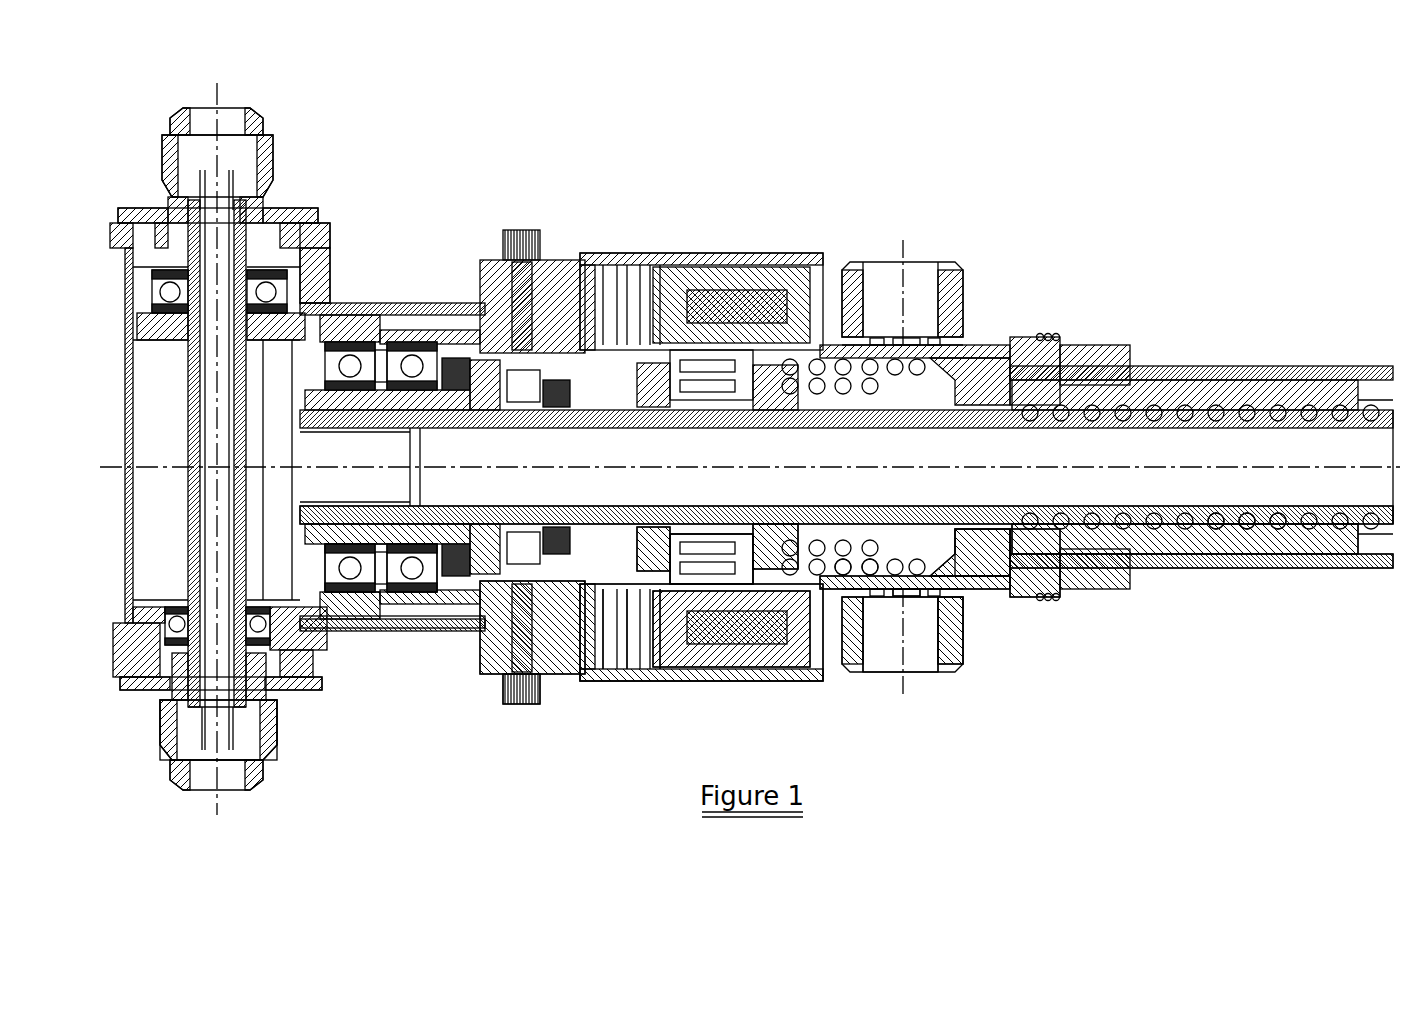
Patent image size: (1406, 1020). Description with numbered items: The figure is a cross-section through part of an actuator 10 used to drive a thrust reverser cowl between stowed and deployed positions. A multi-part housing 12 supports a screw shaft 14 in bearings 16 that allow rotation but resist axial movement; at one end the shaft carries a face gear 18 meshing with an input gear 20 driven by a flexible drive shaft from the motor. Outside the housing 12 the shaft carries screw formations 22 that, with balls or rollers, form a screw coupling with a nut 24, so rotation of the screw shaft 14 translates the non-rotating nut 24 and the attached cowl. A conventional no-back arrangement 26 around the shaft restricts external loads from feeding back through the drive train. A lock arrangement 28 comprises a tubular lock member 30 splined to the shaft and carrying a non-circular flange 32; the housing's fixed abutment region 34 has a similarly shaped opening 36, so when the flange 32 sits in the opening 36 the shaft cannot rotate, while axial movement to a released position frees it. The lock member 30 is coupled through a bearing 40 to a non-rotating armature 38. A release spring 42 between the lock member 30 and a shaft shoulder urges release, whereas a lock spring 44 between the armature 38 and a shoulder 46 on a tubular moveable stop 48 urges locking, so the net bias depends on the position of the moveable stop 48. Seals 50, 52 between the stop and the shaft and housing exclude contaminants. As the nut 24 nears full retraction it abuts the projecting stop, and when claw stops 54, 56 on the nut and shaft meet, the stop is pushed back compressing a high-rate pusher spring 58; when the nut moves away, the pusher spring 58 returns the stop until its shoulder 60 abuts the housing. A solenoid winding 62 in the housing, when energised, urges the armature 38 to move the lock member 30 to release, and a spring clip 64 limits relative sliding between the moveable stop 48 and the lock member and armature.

The actuator 10 is at (914, 230).
The housing 12 is at (410, 642).
The screw shaft 14 is at (1155, 408).
The bearings 16 is at (417, 580).
The face gear 18 is at (295, 608).
The input gear 20 is at (328, 256).
The screw formations 22 is at (1260, 407).
The nut 24 is at (1310, 392).
The no-back arrangement 26 is at (510, 572).
The lock arrangement 28 is at (655, 250).
The lock member 30 is at (745, 330).
The flange 32 is at (670, 266).
The abutment region 34 is at (608, 262).
The opening 36 is at (627, 262).
The armature 38 is at (767, 582).
The bearing 40 is at (687, 572).
The release spring 42 is at (660, 542).
The lock spring 44 is at (838, 577).
The shoulder 46 is at (903, 670).
The moveable stop 48 is at (977, 597).
The seal 50 is at (960, 350).
The seal 52 is at (972, 395).
The claw stop 54 is at (1047, 337).
The claw stop 56 is at (1020, 597).
The pusher spring 58 is at (952, 612).
The shoulder 60 is at (960, 598).
The solenoid winding 62 is at (772, 290).
The spring clip 64 is at (817, 597).